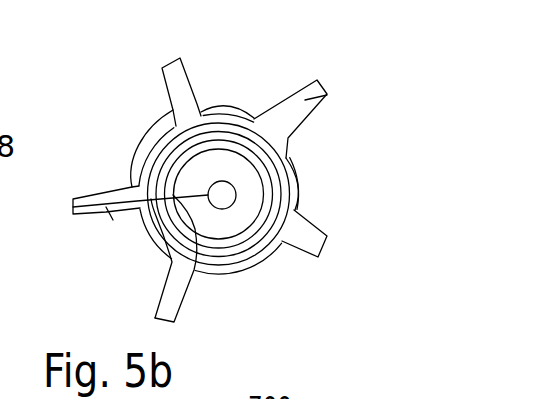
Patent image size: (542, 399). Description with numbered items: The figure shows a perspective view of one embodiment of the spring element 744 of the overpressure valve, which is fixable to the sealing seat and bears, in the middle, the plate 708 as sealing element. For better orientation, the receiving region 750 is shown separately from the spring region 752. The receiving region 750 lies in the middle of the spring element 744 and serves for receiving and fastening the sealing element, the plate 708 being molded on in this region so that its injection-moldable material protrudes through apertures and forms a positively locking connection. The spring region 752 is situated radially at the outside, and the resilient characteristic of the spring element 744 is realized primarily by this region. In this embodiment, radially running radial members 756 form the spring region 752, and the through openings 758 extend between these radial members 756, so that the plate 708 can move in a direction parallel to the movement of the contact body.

The spring element 744 is at (119, 117).
The plate 708 is at (252, 171).
The through openings 758 is at (218, 71).
The radial members 756 is at (328, 95).
The spring region 752 is at (100, 214).
The receiving region 750 is at (198, 269).